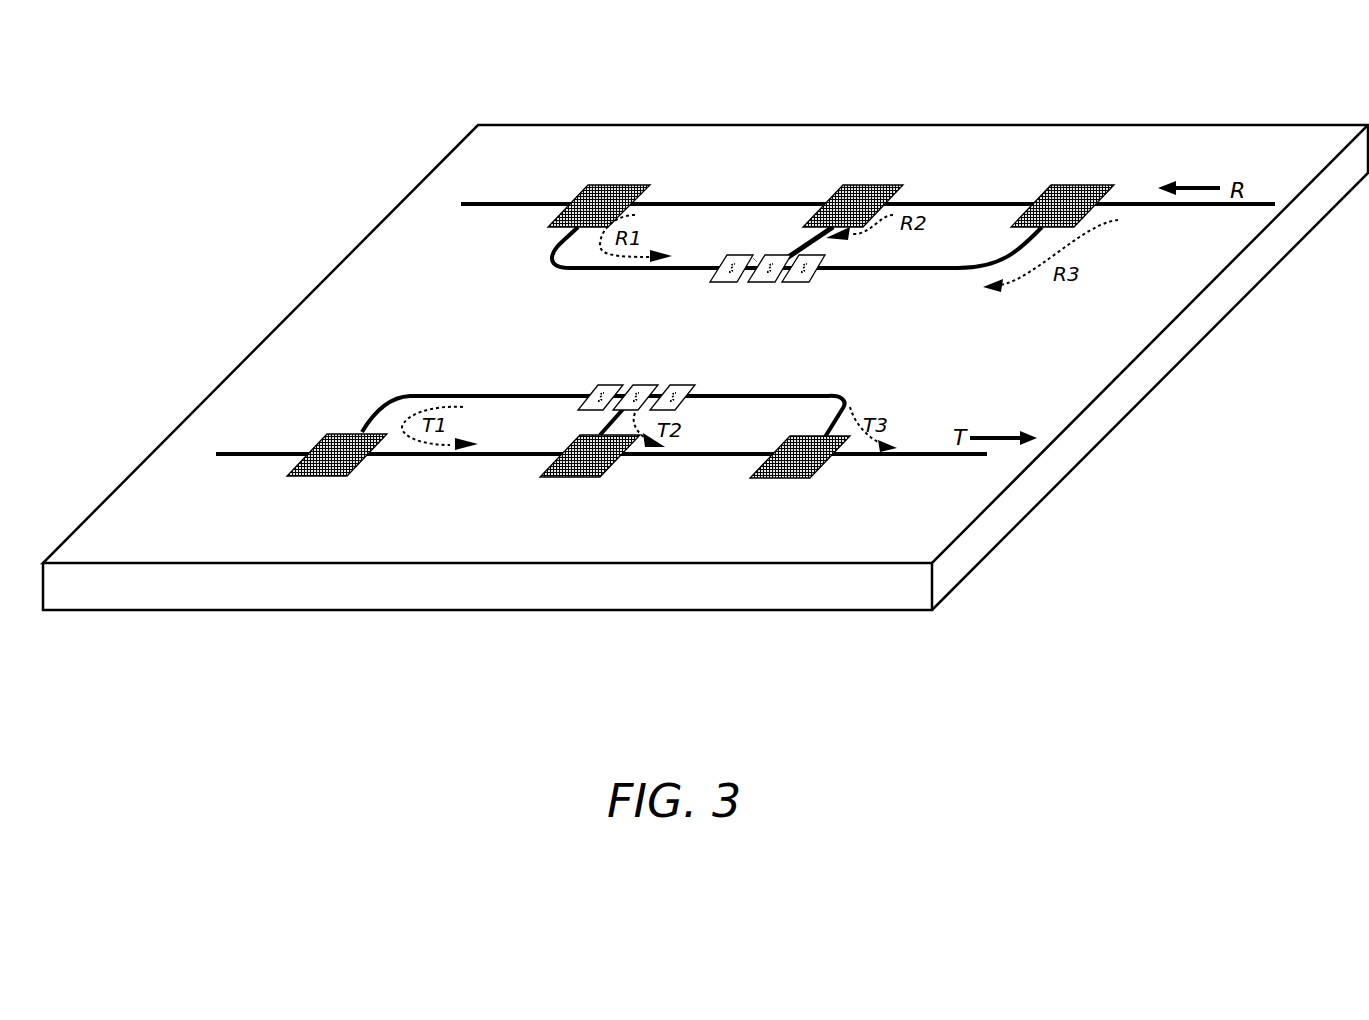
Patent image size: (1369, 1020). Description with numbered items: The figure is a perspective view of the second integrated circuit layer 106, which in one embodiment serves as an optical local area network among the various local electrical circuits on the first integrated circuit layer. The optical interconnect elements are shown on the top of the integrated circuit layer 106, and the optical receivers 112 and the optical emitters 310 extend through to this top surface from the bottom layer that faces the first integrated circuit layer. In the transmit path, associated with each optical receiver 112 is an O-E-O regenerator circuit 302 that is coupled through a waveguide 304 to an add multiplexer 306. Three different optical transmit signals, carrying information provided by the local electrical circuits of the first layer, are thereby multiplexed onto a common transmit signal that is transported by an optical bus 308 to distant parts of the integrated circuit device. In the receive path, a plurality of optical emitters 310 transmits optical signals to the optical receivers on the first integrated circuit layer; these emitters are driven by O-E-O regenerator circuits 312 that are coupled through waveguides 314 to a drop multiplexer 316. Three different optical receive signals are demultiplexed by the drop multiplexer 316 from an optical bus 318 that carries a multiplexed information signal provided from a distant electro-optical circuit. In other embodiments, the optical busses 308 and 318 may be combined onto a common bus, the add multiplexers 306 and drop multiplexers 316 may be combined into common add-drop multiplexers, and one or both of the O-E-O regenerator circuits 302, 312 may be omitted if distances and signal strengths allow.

The second integrated circuit layer 106 is at (263, 267).
The optical receivers 112 is at (672, 361).
The O-E-O regenerator circuit 302 is at (690, 385).
The waveguide 304 is at (778, 392).
The add multiplexer 306 is at (360, 477).
The optical bus 308 is at (930, 453).
The optical emitters 310 is at (797, 282).
The O-E-O regenerator circuits 312 is at (778, 255).
The waveguides 314 is at (920, 273).
The drop multiplexer 316 is at (608, 185).
The optical bus 318 is at (1135, 204).